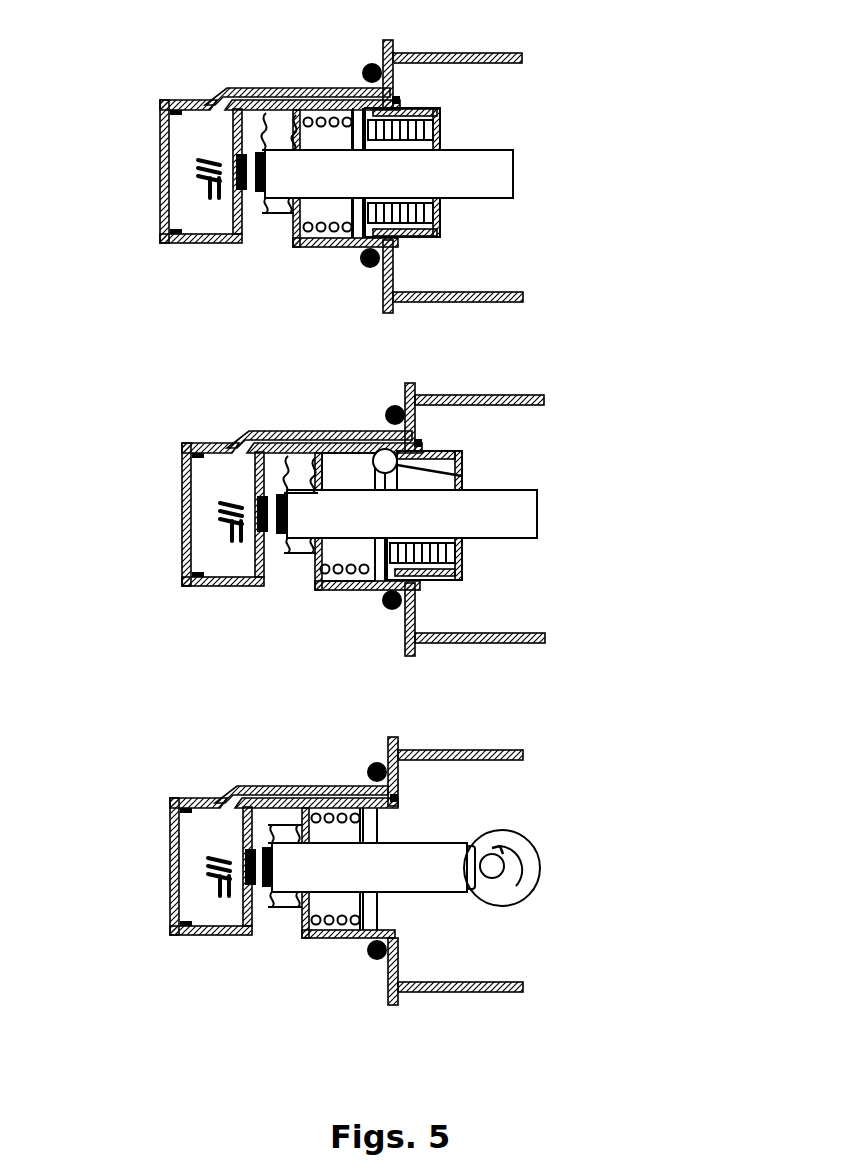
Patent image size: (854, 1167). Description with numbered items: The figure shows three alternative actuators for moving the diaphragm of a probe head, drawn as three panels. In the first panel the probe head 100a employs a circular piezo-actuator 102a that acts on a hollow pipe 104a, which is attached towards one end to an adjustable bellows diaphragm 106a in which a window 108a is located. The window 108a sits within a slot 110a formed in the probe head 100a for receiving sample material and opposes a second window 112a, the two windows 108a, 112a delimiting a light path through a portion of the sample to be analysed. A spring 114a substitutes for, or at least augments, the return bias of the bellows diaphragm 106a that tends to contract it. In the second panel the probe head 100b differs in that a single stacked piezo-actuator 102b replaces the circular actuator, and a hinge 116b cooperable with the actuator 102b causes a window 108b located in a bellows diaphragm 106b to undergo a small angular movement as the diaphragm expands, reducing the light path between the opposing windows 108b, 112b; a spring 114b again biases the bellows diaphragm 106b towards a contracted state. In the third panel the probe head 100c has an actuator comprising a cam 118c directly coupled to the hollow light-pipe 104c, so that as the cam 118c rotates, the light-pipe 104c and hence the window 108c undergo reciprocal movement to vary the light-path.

The probe head 100a is at (98, 67).
The circular piezo-actuator 102a is at (437, 212).
The hollow pipe 104a is at (468, 148).
The adjustable bellows diaphragm 106a is at (292, 112).
The window 108a is at (266, 163).
The slot 110a is at (265, 233).
The second window 112a is at (232, 150).
The spring 114a is at (313, 118).
The probe head 100b is at (83, 417).
The single stacked piezo-actuator 102b is at (462, 549).
The bellows diaphragm 106b is at (297, 455).
The window 108b is at (288, 505).
The window 112b is at (254, 493).
The spring 114b is at (353, 572).
The hinge 116b is at (462, 475).
The probe head 100c is at (83, 787).
The hollow light-pipe 104c is at (418, 840).
The window 108c is at (274, 857).
The cam 118c is at (532, 890).